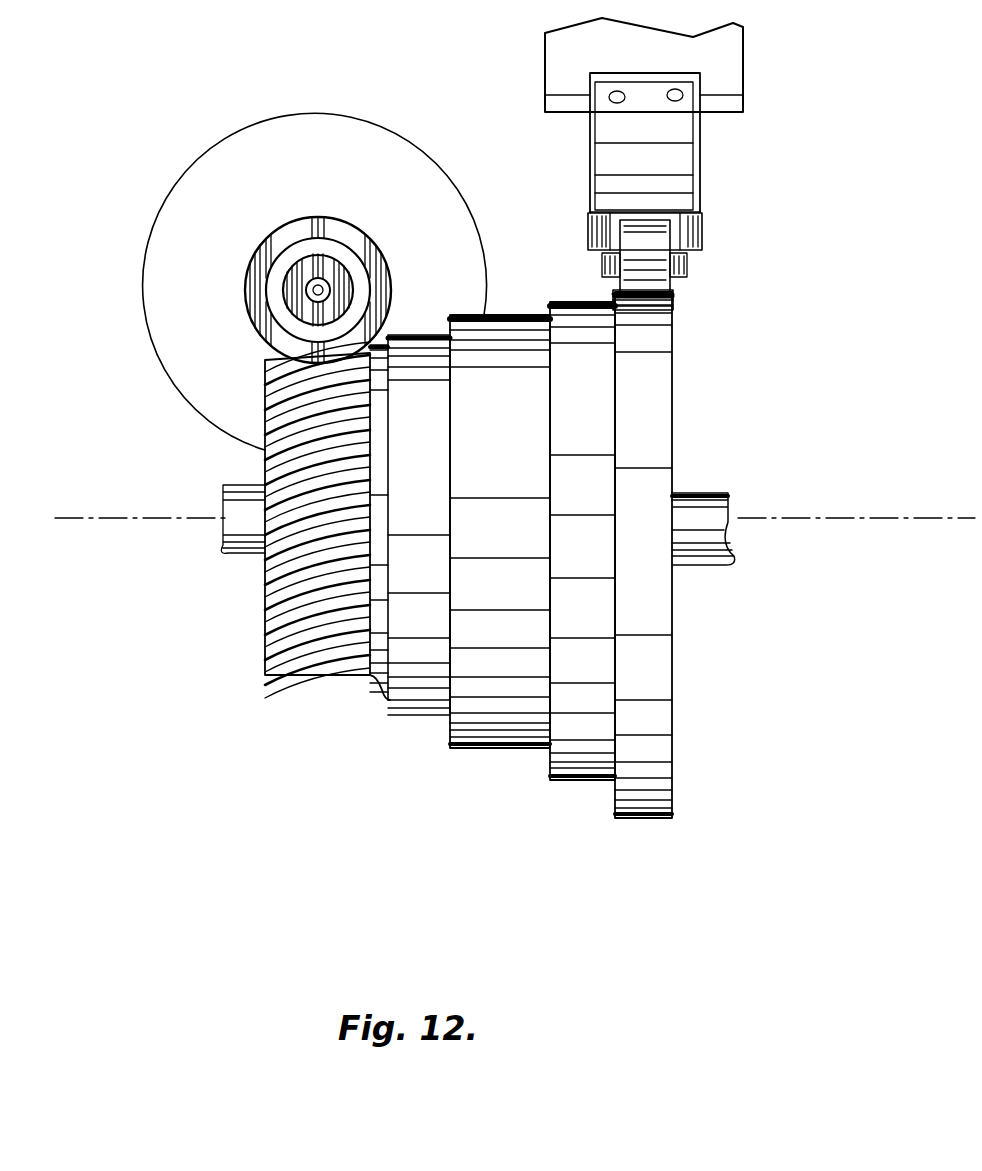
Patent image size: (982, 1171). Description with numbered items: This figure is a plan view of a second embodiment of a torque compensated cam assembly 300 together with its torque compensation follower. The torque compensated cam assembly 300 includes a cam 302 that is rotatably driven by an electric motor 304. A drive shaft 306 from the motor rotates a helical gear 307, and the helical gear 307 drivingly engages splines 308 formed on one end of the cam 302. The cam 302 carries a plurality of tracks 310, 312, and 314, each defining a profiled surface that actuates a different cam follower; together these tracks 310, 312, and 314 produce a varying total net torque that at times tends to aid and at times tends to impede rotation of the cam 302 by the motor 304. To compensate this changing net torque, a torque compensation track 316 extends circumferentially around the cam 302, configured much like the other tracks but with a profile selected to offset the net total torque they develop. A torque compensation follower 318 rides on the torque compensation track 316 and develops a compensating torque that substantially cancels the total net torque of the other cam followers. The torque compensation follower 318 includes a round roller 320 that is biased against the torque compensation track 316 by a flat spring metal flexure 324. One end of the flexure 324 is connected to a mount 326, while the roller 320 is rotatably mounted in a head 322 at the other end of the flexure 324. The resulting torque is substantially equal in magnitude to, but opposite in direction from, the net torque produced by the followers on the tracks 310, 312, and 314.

The torque compensated cam assembly 300 is at (385, 822).
The cam 302 is at (368, 690).
The electric motor 304 is at (158, 232).
The drive shaft 306 is at (316, 291).
The helical gear 307 is at (245, 285).
The splines 308 is at (298, 607).
The track 310 is at (418, 690).
The track 312 is at (493, 742).
The track 314 is at (578, 785).
The torque compensation track 316 is at (647, 822).
The torque compensation follower 318 is at (572, 186).
The roller 320 is at (650, 275).
The head 322 is at (683, 262).
The flexure 324 is at (685, 162).
The mount 326 is at (735, 68).